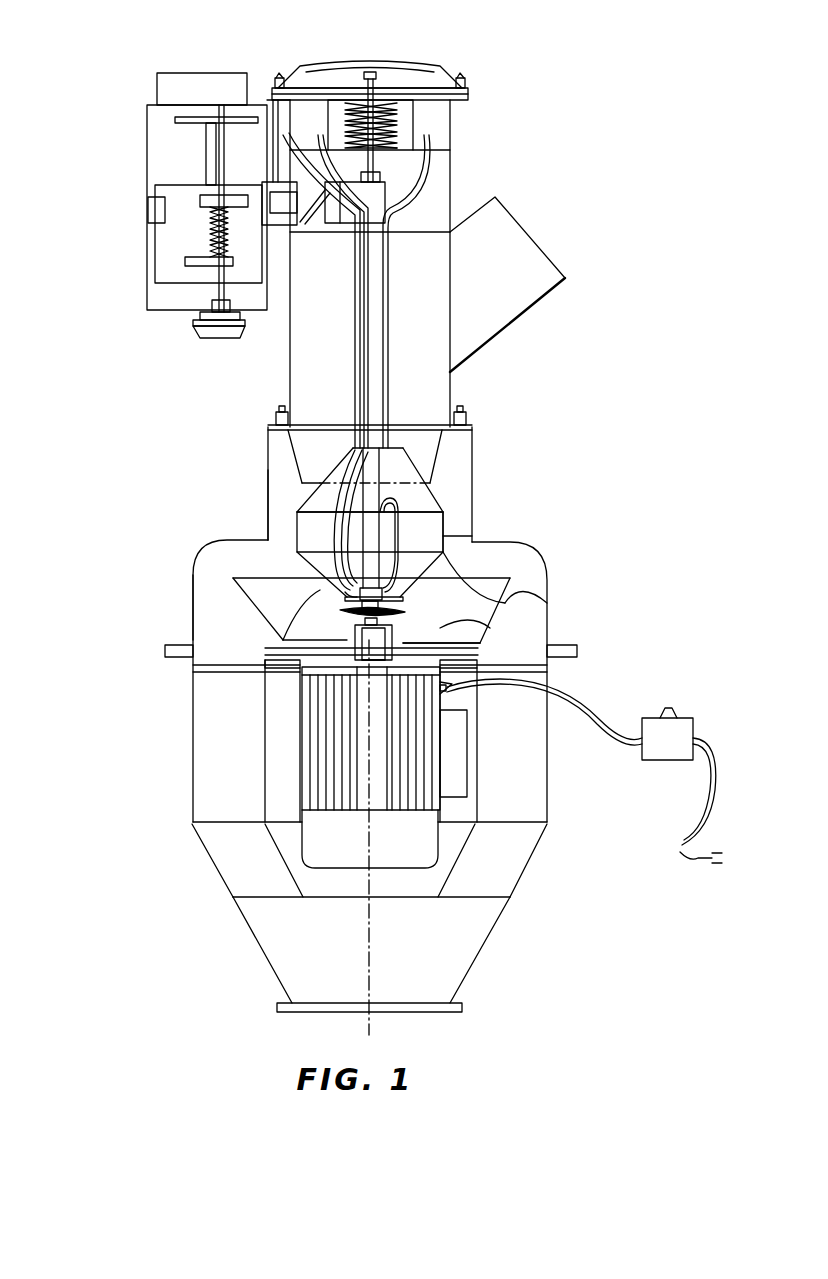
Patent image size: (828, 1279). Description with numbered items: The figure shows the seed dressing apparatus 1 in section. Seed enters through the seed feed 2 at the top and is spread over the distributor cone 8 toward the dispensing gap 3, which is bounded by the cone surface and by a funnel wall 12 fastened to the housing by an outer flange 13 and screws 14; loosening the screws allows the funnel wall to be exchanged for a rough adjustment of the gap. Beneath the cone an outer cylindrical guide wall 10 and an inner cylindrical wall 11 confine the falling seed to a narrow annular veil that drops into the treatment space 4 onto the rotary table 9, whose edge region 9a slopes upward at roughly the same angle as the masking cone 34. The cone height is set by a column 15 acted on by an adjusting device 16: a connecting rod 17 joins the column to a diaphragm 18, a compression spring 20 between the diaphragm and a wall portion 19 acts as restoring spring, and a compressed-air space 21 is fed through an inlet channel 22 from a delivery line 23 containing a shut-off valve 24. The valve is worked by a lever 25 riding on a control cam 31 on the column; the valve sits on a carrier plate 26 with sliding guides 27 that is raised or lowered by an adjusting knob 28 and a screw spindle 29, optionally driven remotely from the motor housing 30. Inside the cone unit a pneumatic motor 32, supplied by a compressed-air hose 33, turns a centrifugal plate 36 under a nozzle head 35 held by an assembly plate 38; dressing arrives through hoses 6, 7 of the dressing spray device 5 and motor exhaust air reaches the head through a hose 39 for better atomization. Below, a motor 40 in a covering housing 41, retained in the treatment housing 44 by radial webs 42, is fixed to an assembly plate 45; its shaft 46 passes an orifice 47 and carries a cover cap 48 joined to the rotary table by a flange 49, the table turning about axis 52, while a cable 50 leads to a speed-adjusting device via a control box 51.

The seed dressing apparatus 1 is at (240, 508).
The seed feed 2 is at (527, 245).
The dispensing gap 3 is at (445, 483).
The treatment space 4 is at (500, 560).
The dressing spray device 5 is at (330, 615).
The hose 6 is at (345, 505).
The hose 7 is at (353, 468).
The distributor cone 8 is at (440, 492).
The rotary table 9 is at (495, 612).
The edge region 9a is at (490, 622).
The outer cylindrical guide wall 10 is at (268, 525).
The inner cylindrical wall 11 is at (448, 534).
The funnel wall 12 is at (282, 465).
The outer flange 13 is at (468, 425).
The screws 14 is at (466, 418).
The column 15 is at (355, 340).
The adjusting device 16 is at (399, 50).
The connecting rod 17 is at (373, 165).
The diaphragm 18 is at (372, 72).
The wall portion 19 is at (413, 112).
The compression spring 20 is at (345, 103).
The compressed-air space 21 is at (412, 70).
The inlet channel 22 is at (280, 77).
The delivery line 23 is at (268, 152).
The shut-off valve 24 is at (280, 225).
The actuating lever 25 is at (305, 224).
The carrier plate 26 is at (160, 250).
The sliding guides 27 is at (200, 200).
The adjusting knob 28 is at (198, 333).
The screw spindle 29 is at (157, 218).
The motor housing 30 is at (195, 73).
The control cam 31 is at (340, 215).
The pneumatic motor 32 is at (343, 568).
The compressed-air hose 33 is at (385, 362).
The masking cone 34 is at (493, 610).
The nozzle head 35 is at (403, 602).
The centrifugal plate 36 is at (410, 622).
The assembly plate 38 is at (345, 610).
The hose 39 is at (398, 535).
The motor 40 is at (371, 767).
The covering housing 41 is at (480, 770).
The radial webs 42 is at (255, 895).
The treatment housing 44 is at (193, 605).
The assembly plate 45 is at (260, 645).
The shaft 46 is at (372, 665).
The orifice 47 is at (360, 660).
The cover cap 48 is at (355, 640).
The flange 49 is at (470, 646).
The cable 50 is at (622, 725).
The control box 51 is at (682, 785).
The axis 52 is at (467, 712).